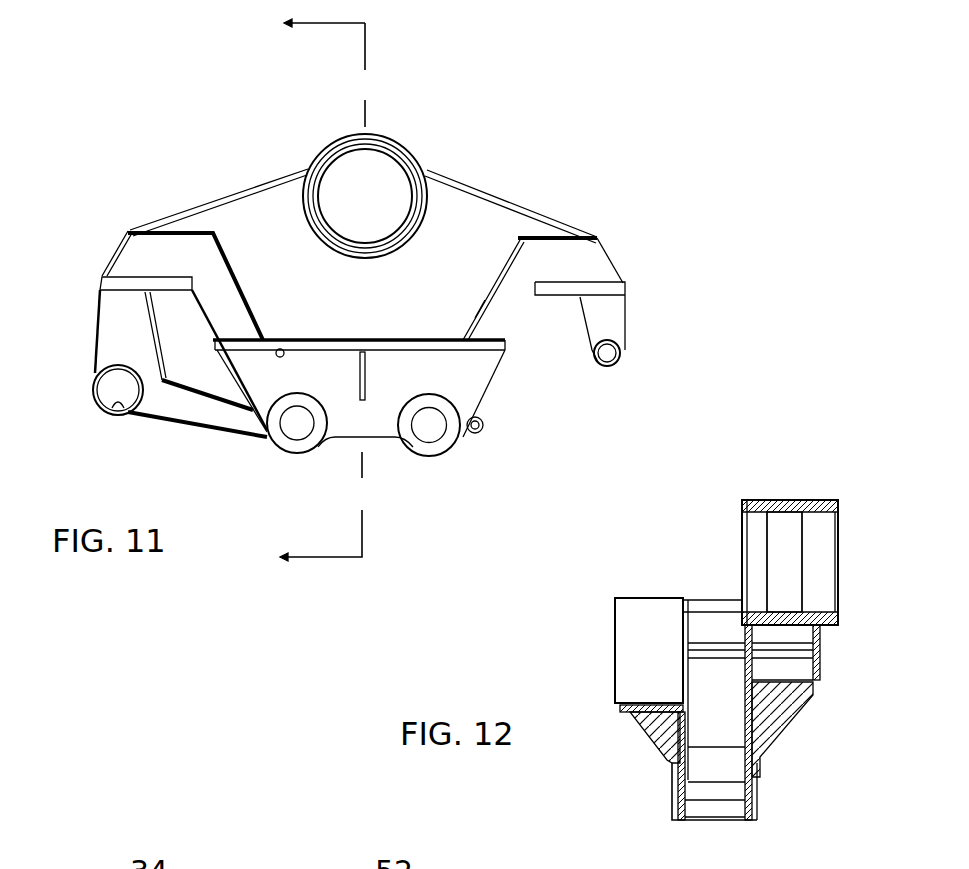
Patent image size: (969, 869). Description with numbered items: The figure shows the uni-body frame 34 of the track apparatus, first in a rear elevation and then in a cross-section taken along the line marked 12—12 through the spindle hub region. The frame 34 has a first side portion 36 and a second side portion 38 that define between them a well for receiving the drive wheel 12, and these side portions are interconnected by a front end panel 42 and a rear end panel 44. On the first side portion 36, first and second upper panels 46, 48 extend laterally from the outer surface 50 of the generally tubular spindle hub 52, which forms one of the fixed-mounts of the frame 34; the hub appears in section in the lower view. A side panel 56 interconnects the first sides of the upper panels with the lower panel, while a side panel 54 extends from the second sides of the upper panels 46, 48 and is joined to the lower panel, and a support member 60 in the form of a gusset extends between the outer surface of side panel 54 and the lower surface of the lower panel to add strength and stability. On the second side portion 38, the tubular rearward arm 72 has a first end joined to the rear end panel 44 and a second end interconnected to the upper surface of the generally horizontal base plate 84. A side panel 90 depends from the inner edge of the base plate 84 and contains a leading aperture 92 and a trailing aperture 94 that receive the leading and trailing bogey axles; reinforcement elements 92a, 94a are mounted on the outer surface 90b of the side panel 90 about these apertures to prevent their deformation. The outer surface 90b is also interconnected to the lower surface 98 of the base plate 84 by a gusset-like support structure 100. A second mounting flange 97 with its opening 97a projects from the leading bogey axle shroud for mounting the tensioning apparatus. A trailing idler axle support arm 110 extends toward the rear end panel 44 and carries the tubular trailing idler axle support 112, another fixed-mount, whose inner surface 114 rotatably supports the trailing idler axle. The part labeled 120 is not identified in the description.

In FIG. 11, the drive wheel 12 is at (306, 289).
In FIG. 11, the frame 34 is at (527, 366).
In FIG. 12, the frame 34 is at (823, 723).
In FIG. 11, the first side portion 36 is at (508, 194).
In FIG. 11, the second side portion 38 is at (218, 238).
In FIG. 11, the front end panel 42 is at (608, 249).
In FIG. 11, the rear end panel 44 is at (115, 252).
In FIG. 11, the first upper panel 46 is at (253, 188).
In FIG. 11, the second upper panel 48 is at (552, 221).
In FIG. 11, the outer surface of spindle hub 50 is at (382, 138).
In FIG. 12, the outer surface of spindle hub 50 is at (753, 500).
In FIG. 11, the spindle hub 52 is at (405, 154).
In FIG. 12, the spindle hub 52 is at (795, 498).
In FIG. 11, the side panel 54 is at (480, 262).
In FIG. 12, the side panel 54 is at (740, 633).
In FIG. 12, the side panel 56 is at (820, 643).
In FIG. 12, the support member 60 is at (778, 718).
In FIG. 12, the rearward arm 72 is at (627, 618).
In FIG. 11, the base plate 84 is at (425, 343).
In FIG. 12, the base plate 84 is at (620, 707).
In FIG. 11, the side panel 90 is at (258, 402).
In FIG. 12, the side panel 90 is at (670, 795).
In FIG. 11, the outer surface of side panel 90b is at (349, 355).
In FIG. 11, the leading aperture 92 is at (438, 428).
In FIG. 11, the reinforcement element 92a is at (427, 448).
In FIG. 11, the trailing aperture 94 is at (293, 430).
In FIG. 11, the reinforcement element 94a is at (280, 404).
In FIG. 11, the second mounting flange 97 is at (480, 435).
In FIG. 11, the opening 97a is at (507, 417).
In FIG. 11, the lower surface of base plate 98 is at (281, 352).
In FIG. 11, the support structure 100 is at (367, 368).
In FIG. 12, the support structure 100 is at (647, 727).
In FIG. 11, the trailing idler axle support arm 110 is at (97, 340).
In FIG. 11, the trailing idler axle support 112 is at (100, 405).
In FIG. 11, the inner surface 114 is at (128, 416).
In FIG. 11, the bracket 120 is at (628, 308).